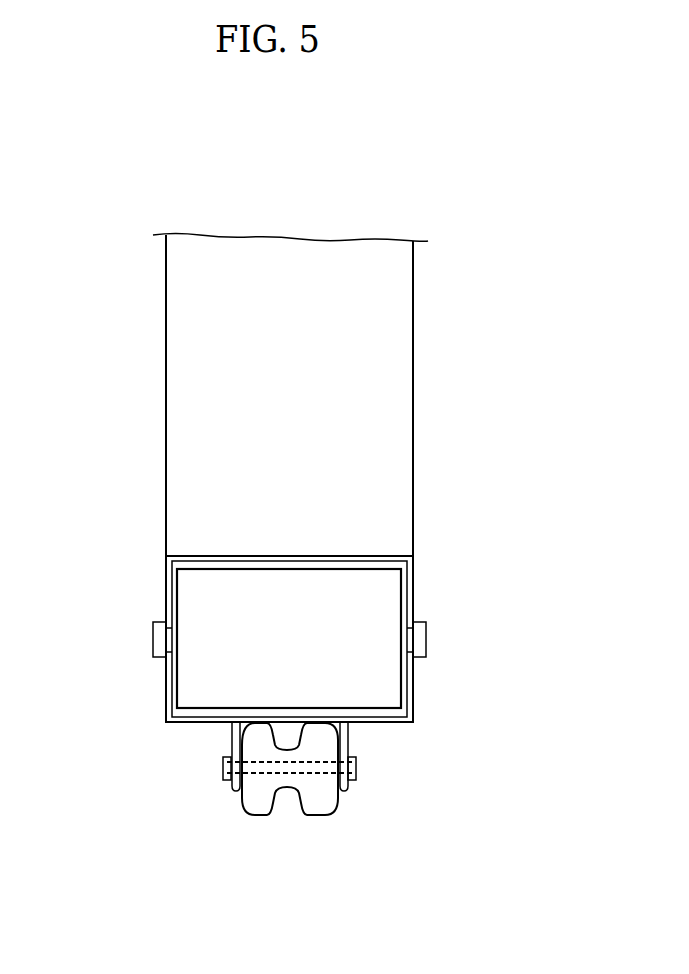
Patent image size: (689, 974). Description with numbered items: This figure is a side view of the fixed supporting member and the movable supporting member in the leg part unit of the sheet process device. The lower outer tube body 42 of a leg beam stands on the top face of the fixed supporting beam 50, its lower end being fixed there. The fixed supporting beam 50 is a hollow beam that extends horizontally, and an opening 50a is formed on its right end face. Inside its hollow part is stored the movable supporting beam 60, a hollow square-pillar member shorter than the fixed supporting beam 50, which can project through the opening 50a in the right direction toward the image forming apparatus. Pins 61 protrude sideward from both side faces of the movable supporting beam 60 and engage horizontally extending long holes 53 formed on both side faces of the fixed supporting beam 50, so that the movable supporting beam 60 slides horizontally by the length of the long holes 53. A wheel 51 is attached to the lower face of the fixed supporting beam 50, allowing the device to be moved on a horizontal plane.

The outer tube body 42 is at (185, 458).
The fixed supporting beam 50 is at (167, 572).
The opening 50a is at (413, 571).
The movable supporting beam 60 is at (195, 609).
The pin 61 is at (155, 638).
The long hole 53 is at (163, 658).
The wheel 51 is at (248, 806).